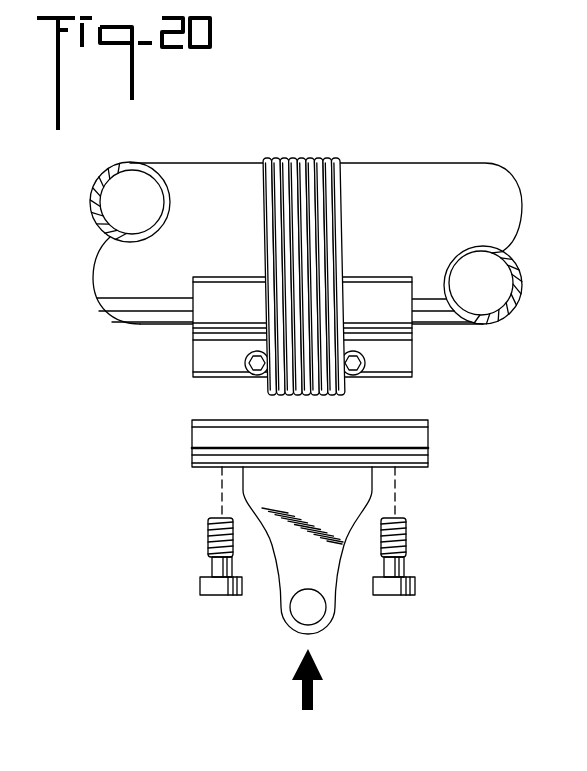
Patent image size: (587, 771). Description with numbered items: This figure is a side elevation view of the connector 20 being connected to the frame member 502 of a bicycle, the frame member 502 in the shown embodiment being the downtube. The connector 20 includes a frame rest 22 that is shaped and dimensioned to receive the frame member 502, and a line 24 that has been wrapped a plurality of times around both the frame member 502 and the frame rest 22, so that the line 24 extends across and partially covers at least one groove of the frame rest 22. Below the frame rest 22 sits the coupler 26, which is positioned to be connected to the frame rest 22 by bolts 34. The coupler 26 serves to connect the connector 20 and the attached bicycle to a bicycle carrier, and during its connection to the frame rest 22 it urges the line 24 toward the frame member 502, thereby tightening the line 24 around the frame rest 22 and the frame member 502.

The connector 20 is at (402, 134).
The frame member 502 is at (228, 189).
The frame rest 22 is at (168, 354).
The line 24 is at (331, 392).
The coupler 26 is at (455, 481).
The bolts 34 is at (215, 572).